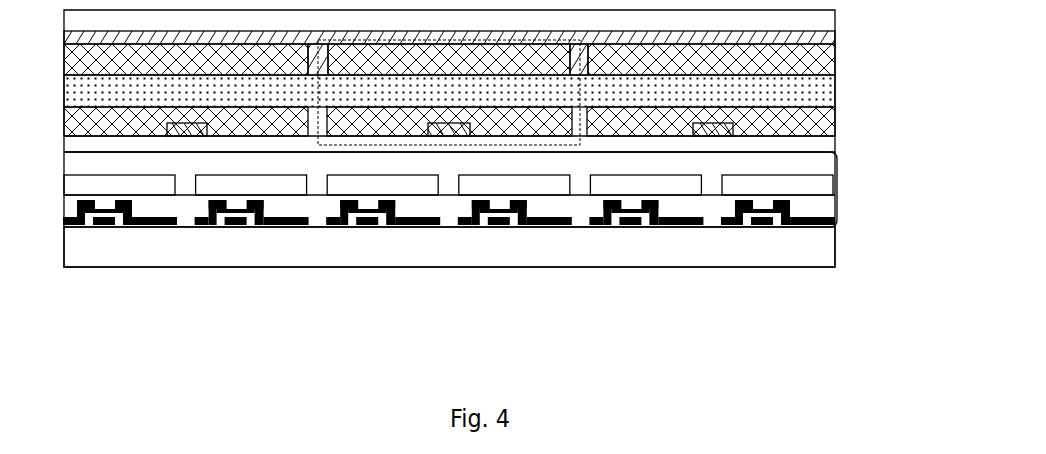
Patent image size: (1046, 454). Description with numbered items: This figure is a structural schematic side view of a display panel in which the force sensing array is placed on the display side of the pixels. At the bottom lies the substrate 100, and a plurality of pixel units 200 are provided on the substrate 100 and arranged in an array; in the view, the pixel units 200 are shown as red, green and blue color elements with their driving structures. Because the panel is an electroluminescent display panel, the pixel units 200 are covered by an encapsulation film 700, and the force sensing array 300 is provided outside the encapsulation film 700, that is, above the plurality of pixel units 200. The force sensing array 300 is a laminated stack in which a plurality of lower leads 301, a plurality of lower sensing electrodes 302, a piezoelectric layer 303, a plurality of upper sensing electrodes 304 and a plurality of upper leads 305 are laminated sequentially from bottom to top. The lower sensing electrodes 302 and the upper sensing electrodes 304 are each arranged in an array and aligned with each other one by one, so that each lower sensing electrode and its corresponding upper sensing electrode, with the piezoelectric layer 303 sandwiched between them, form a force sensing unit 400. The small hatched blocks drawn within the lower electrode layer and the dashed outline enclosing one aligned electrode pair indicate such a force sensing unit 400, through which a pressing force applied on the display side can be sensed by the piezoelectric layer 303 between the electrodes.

The substrate 100 is at (814, 247).
The pixel units 200 is at (836, 152).
The force sensing array 300 is at (503, 86).
The lower leads 301 is at (479, 133).
The lower sensing electrodes 302 is at (815, 114).
The piezoelectric layer 303 is at (812, 91).
The upper sensing electrodes 304 is at (836, 66).
The upper leads 305 is at (819, 38).
The force sensing unit 400 is at (445, 137).
The encapsulation film 700 is at (822, 143).